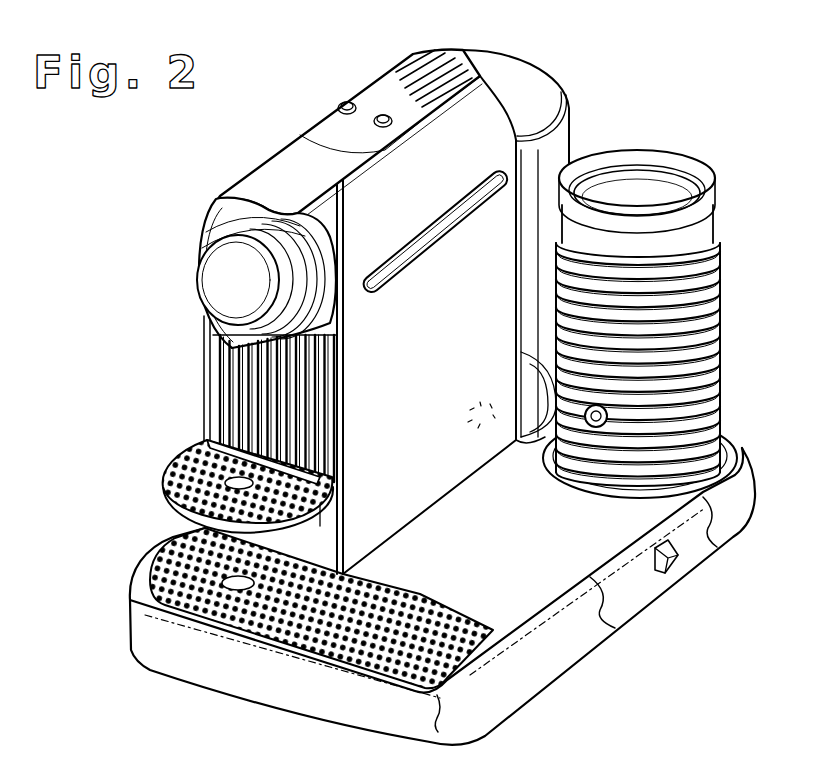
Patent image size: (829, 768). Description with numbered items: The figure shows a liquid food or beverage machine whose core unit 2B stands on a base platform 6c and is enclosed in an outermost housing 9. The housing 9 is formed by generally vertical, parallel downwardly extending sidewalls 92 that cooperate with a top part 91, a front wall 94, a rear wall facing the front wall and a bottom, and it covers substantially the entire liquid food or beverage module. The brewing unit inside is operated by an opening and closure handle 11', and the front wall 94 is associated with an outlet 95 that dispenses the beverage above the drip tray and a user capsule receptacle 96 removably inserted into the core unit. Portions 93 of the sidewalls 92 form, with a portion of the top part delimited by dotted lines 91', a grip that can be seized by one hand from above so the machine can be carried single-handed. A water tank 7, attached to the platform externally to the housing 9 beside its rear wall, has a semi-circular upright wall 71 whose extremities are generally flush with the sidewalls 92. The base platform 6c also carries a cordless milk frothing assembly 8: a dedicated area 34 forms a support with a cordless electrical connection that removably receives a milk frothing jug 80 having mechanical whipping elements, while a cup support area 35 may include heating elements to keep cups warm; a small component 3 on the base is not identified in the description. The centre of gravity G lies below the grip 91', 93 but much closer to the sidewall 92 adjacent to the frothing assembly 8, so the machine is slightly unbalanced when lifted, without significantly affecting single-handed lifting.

The core unit 2B is at (360, 78).
The opening and closure handle 11' is at (330, 132).
The housing 9 is at (207, 213).
The outlet 95 is at (212, 270).
The sidewalls 92 is at (180, 332).
The user capsule receptacle 96 is at (230, 437).
The front wall 94 is at (322, 335).
The sidewall portions 93 is at (455, 210).
The top part 91 is at (443, 115).
The dotted lines delimiting grip portion of top part 91' is at (484, 80).
The water tank 7 is at (607, 72).
The semi-circular upright wall 71 is at (552, 157).
The cordless milk frothing assembly 8 is at (662, 324).
The milk frothing jug 80 is at (722, 330).
The centre of gravity G is at (490, 426).
The base platform 6c is at (418, 604).
The dedicated area 34 is at (717, 547).
The power switch 3 is at (673, 560).
The cup support area 35 is at (615, 628).